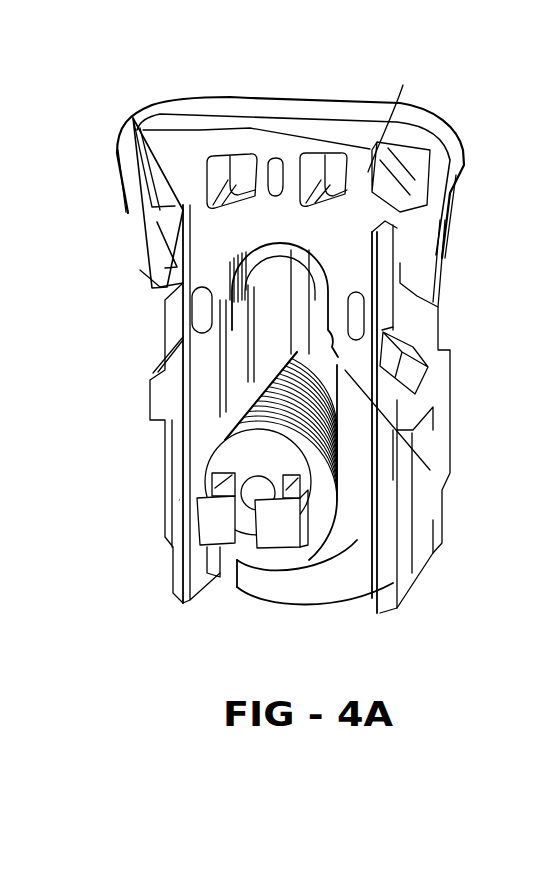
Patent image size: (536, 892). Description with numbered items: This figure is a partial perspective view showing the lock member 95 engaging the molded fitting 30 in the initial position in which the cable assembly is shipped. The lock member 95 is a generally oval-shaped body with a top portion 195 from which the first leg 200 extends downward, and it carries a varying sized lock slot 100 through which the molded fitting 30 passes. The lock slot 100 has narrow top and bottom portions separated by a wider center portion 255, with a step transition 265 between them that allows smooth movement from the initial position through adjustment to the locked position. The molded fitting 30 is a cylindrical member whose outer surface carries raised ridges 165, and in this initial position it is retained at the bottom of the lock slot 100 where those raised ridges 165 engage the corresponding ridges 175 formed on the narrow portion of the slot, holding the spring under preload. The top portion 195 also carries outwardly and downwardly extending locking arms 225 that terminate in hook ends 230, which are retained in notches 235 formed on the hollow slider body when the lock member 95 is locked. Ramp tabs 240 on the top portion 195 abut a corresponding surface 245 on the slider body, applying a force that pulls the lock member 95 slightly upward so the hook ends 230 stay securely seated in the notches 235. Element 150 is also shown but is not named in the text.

The molded fitting 30 is at (243, 550).
The lock member 95 is at (288, 113).
The varying sized lock slot 100 is at (263, 337).
The slot 150 is at (272, 165).
The raised ridges 165 is at (207, 430).
The ridges 175 is at (227, 288).
The top portion 195 is at (253, 145).
The first leg 200 is at (372, 195).
The locking arms 225 is at (123, 157).
The hook ends 230 is at (418, 292).
The notches 235 is at (422, 430).
The ramp tabs 240 is at (402, 211).
The corresponding surface 245 is at (420, 367).
The wider center portion 255 is at (235, 402).
The step transition 265 is at (430, 470).